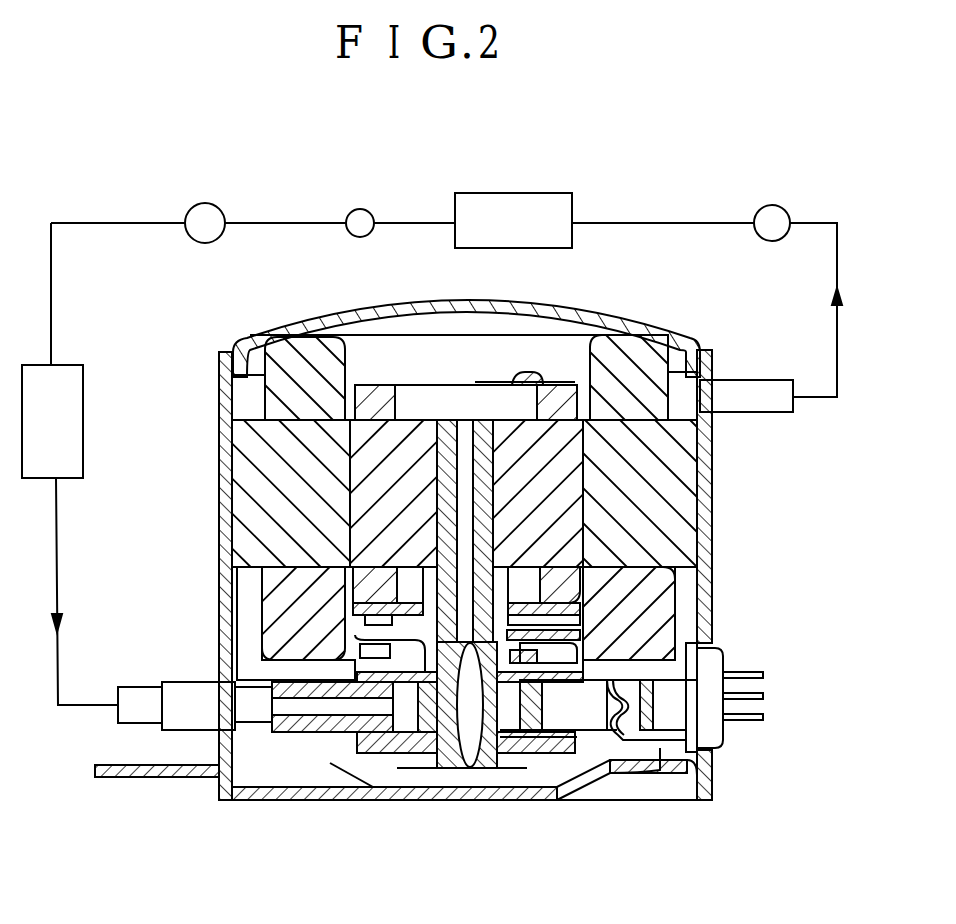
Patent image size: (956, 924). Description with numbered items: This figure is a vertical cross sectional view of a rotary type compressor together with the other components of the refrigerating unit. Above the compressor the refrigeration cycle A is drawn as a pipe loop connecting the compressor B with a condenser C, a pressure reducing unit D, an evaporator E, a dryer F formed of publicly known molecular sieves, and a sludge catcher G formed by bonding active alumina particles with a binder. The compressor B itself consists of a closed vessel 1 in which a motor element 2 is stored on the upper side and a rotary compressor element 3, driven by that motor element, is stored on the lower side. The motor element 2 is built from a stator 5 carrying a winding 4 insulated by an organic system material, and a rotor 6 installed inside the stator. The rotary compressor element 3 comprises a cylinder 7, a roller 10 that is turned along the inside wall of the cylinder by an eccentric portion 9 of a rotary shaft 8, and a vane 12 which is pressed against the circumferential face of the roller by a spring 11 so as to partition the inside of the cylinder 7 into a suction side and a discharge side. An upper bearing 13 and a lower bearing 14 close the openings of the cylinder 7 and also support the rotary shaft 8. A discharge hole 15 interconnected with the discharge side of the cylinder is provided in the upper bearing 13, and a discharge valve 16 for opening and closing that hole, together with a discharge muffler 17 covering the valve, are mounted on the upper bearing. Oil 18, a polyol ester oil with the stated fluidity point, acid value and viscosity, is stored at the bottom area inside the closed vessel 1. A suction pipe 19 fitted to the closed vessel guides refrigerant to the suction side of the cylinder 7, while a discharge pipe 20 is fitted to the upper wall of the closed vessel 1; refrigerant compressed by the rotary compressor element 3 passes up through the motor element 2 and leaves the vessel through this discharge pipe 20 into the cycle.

The closed vessel 1 is at (228, 460).
The motor element 2 is at (672, 464).
The rotary compressor element 3 is at (305, 727).
The winding 4 is at (622, 355).
The stator 5 is at (272, 465).
The rotor 6 is at (370, 500).
The cylinder 7 is at (325, 734).
The rotary shaft 8 is at (500, 512).
The eccentric portion 9 is at (510, 706).
The roller 10 is at (550, 744).
The spring 11 is at (628, 742).
The vane 12 is at (576, 722).
The upper bearing 13 is at (340, 657).
The lower bearing 14 is at (405, 755).
The discharge hole 15 is at (686, 666).
The discharge valve 16 is at (548, 662).
The discharge muffler 17 is at (560, 630).
The oil 18 is at (665, 745).
The suction pipe 19 is at (150, 715).
The discharge pipe 20 is at (750, 393).
The refrigeration cycle A is at (655, 223).
The compressor B is at (712, 493).
The condenser C is at (462, 193).
The pressure reducing unit D is at (195, 208).
The evaporator E is at (65, 365).
The dryer F is at (352, 212).
The sludge catcher G is at (780, 207).